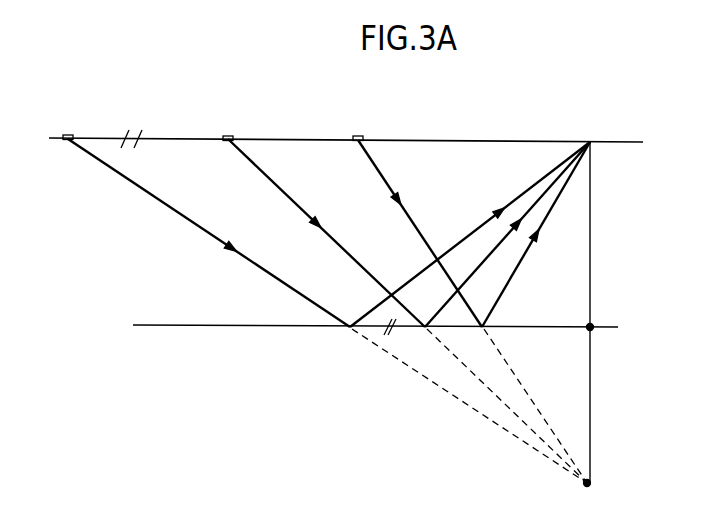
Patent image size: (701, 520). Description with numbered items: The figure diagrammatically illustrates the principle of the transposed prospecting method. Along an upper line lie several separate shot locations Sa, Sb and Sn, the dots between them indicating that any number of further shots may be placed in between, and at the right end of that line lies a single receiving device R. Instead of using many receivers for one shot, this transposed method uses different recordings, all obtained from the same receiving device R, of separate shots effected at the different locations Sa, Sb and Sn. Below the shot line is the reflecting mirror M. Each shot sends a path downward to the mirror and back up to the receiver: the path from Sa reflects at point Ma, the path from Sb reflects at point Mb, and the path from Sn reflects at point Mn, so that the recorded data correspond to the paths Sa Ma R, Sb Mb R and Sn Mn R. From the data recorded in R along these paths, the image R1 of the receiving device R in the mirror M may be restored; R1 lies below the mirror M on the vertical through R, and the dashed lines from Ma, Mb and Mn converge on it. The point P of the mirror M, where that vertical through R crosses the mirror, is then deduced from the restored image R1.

The shot location Sn is at (204, 222).
The shot location Sb is at (321, 222).
The shot location Sa is at (416, 222).
The receiving device R is at (594, 301).
The reflection point on mirror Mn is at (460, 312).
The reflection point on mirror Mb is at (500, 312).
The reflection point on mirror Ma is at (529, 312).
The point of mirror P is at (595, 320).
The mirror M is at (388, 329).
The image of receiving device R1 is at (598, 491).